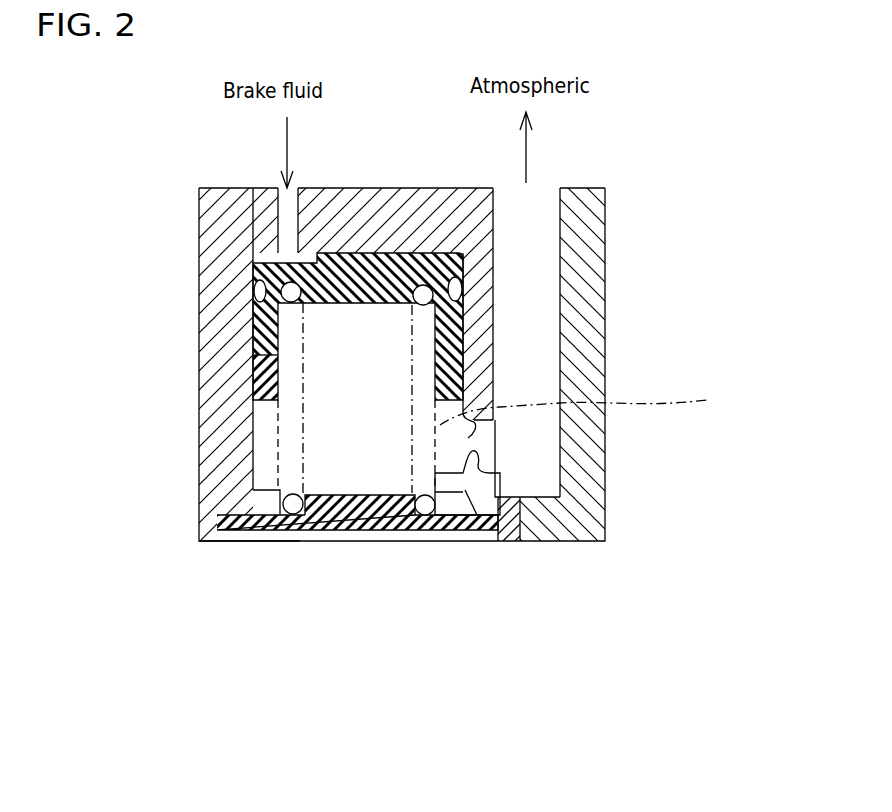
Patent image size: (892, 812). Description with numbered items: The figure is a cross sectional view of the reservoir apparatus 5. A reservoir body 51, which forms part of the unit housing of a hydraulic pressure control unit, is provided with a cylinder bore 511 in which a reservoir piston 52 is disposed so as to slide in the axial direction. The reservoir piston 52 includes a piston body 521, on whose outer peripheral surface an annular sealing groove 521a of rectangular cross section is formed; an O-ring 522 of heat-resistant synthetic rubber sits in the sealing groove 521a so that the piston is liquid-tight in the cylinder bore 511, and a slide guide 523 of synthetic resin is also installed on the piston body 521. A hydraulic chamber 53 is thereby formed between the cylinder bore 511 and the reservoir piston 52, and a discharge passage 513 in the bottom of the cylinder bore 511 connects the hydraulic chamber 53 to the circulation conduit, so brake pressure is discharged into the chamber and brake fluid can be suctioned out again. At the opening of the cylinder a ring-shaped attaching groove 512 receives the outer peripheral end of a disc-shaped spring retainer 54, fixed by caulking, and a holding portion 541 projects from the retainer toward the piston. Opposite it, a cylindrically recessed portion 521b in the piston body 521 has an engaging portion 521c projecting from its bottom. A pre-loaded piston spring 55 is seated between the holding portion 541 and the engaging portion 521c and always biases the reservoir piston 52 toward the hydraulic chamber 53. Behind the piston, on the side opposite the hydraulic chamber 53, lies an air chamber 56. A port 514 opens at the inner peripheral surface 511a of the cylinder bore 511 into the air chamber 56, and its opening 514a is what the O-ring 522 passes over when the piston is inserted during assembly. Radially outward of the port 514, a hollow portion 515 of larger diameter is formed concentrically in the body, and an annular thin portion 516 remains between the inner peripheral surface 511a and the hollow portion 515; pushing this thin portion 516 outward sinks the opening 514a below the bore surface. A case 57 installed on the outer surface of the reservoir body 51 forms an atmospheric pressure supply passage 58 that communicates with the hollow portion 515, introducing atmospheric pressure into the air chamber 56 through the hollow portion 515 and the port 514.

The reservoir apparatus 5 is at (191, 136).
The reservoir body 51 is at (202, 237).
The cylinder bore 511 is at (253, 437).
The inner peripheral surface 511a is at (253, 488).
The attaching groove 512 is at (230, 542).
The discharge passage 513 is at (292, 212).
The port 514 is at (433, 517).
The opening 514a is at (502, 438).
The hollow portion 515 is at (496, 527).
The thin portion 516 is at (477, 437).
The reservoir piston 52 is at (253, 262).
The piston body 521 is at (463, 325).
The sealing groove 521a is at (254, 288).
The recessed portion 521b is at (253, 330).
The engaging portion 521c is at (463, 352).
The O-ring 522 is at (463, 287).
The slide guide 523 is at (253, 377).
The hydraulic chamber 53 is at (503, 213).
The spring retainer 54 is at (392, 530).
The holding portion 541 is at (327, 463).
The piston spring 55 is at (589, 405).
The air chamber 56 is at (277, 517).
The case 57 is at (597, 490).
The atmospheric pressure supply passage 58 is at (567, 250).